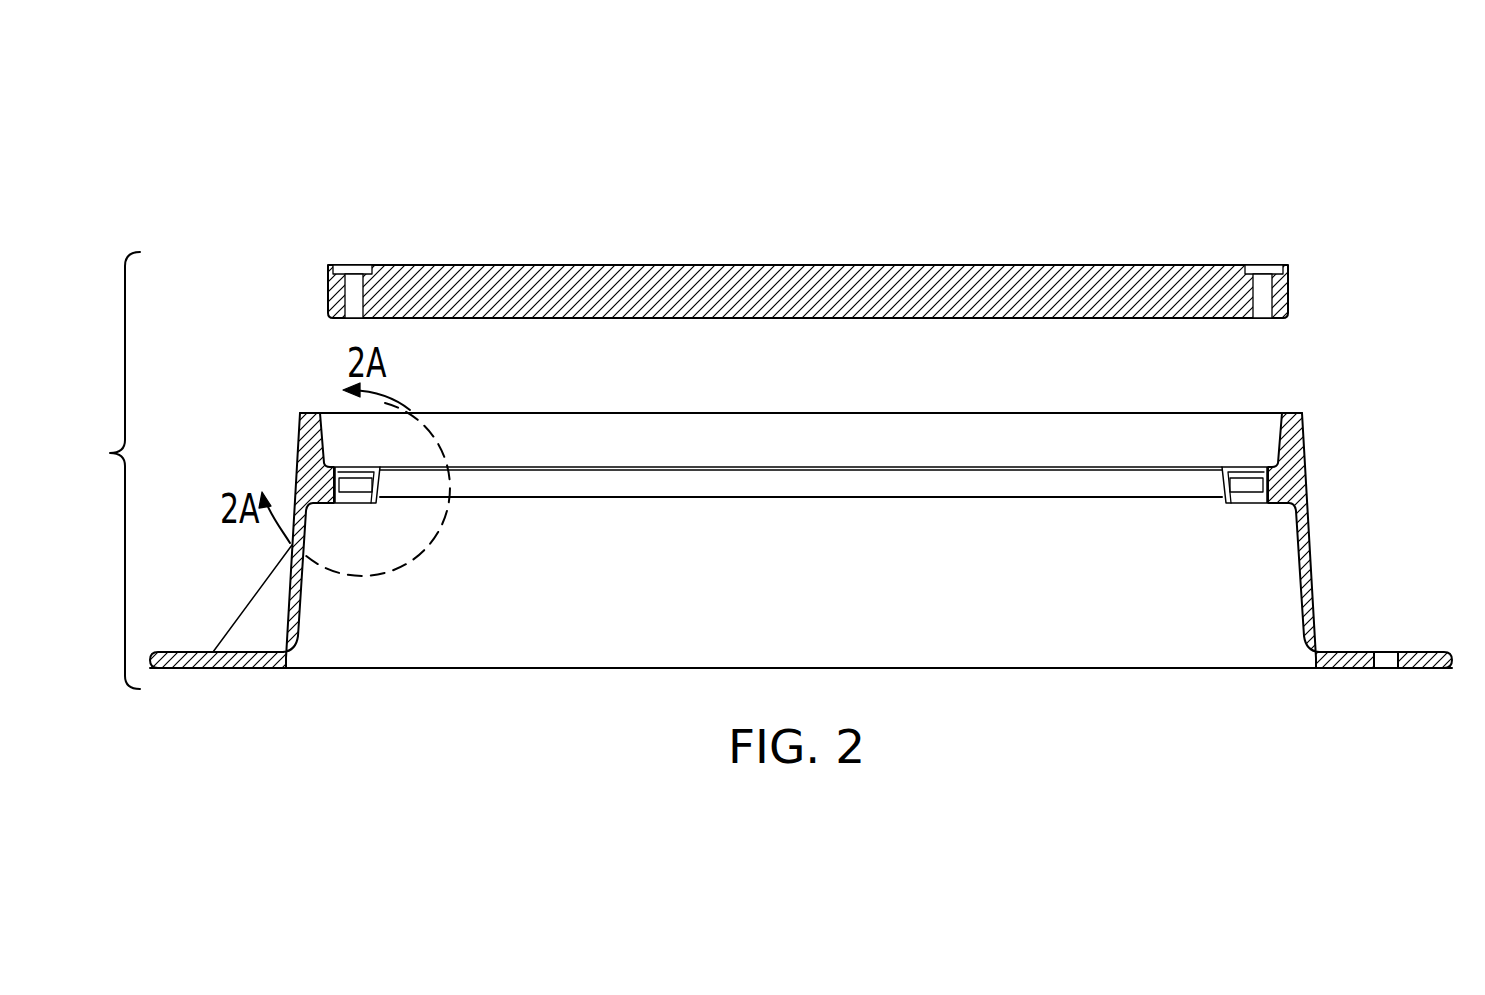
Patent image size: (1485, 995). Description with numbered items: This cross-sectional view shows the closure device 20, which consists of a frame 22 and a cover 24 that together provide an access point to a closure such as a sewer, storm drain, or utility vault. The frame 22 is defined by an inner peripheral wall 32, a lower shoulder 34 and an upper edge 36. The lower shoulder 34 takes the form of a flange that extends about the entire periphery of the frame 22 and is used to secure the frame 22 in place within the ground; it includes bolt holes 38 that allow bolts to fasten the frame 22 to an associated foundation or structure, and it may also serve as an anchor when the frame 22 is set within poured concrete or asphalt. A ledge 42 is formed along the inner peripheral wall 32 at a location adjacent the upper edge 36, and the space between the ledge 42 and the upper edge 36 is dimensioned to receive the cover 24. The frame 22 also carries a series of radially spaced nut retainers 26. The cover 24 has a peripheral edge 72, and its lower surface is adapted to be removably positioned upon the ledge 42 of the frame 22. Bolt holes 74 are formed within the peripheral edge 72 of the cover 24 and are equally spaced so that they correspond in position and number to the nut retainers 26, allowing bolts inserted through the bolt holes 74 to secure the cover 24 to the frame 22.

The closure device 20 is at (1277, 61).
The frame 22 is at (805, 546).
The cover 24 is at (818, 233).
The retainer 26 is at (801, 472).
The inner peripheral wall 32 is at (297, 614).
The lower shoulder 34 is at (193, 668).
The upper edge 36 is at (1343, 365).
The bolt hole 38 is at (1376, 603).
The ledge 42 is at (380, 505).
The peripheral edge 72 is at (1368, 282).
The bolt hole 74 is at (1332, 180).